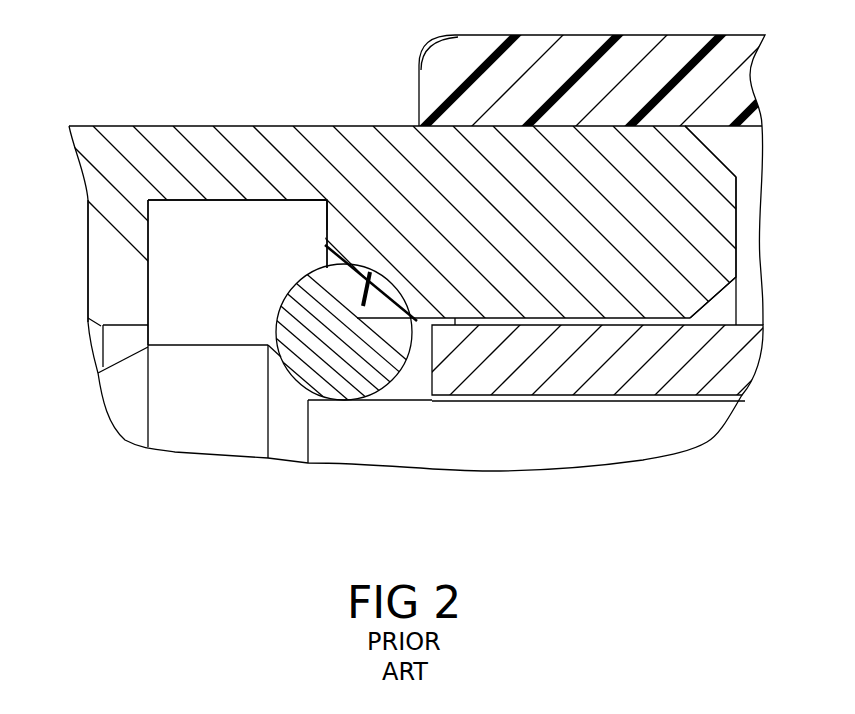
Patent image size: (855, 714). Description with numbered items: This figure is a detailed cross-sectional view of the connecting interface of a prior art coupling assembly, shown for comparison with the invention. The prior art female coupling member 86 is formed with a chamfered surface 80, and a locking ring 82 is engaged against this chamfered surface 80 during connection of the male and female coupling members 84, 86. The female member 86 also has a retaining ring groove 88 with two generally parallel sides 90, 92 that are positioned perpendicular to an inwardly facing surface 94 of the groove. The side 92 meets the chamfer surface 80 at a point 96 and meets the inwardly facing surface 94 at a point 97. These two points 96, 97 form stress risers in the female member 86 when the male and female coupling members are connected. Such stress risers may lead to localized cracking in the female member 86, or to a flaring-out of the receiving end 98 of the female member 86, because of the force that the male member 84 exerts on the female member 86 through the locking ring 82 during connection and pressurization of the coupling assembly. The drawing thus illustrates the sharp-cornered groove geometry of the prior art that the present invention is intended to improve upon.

The chamfered surface 80 is at (420, 305).
The locking ring 82 is at (353, 373).
The male coupling member 84 is at (100, 452).
The female coupling member 86 is at (177, 117).
The retaining ring groove 88 is at (168, 272).
The side 90 is at (148, 293).
The side 92 is at (326, 228).
The inwardly facing surface 94 is at (168, 200).
The point 96 is at (327, 248).
The point 97 is at (327, 200).
The receiving end 98 is at (663, 219).